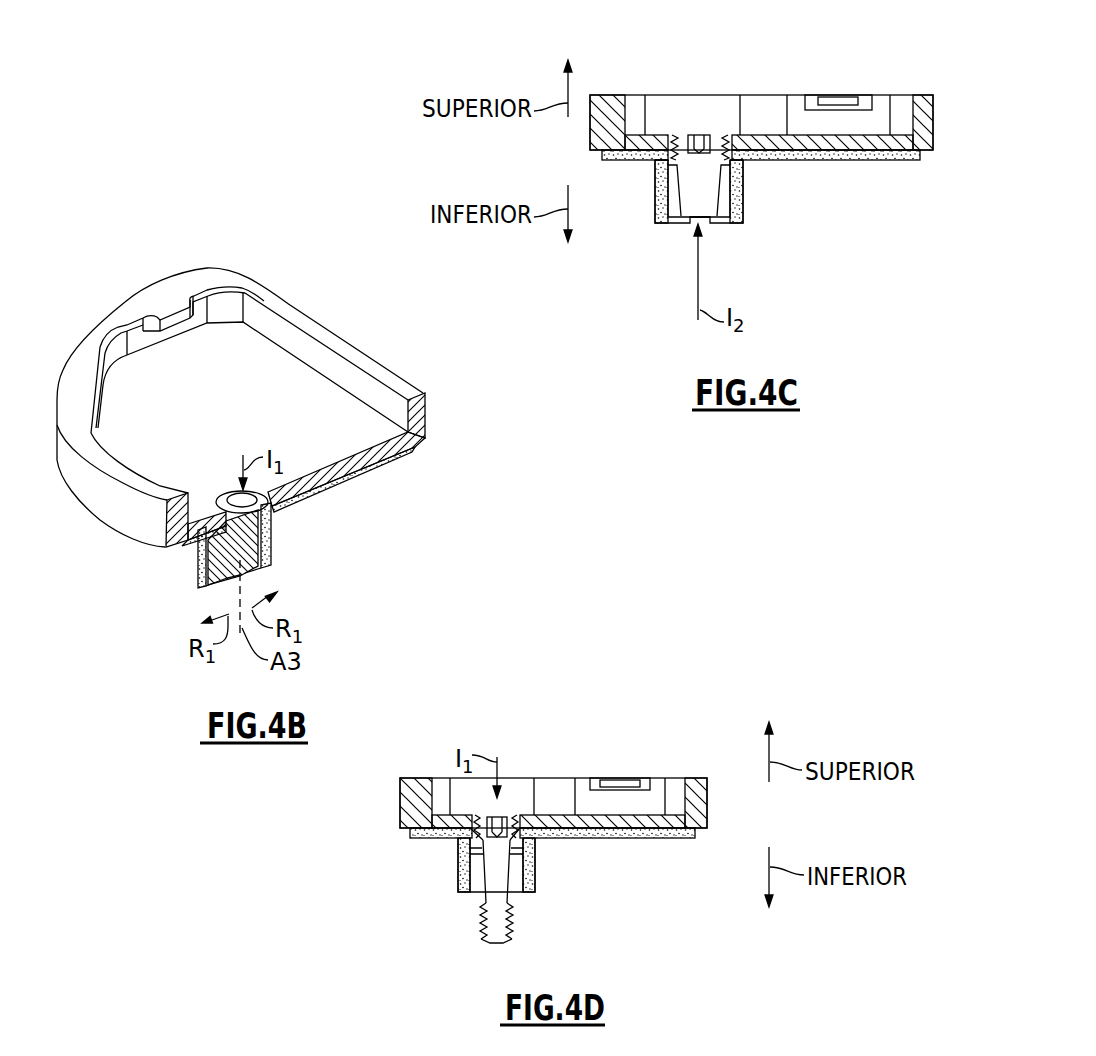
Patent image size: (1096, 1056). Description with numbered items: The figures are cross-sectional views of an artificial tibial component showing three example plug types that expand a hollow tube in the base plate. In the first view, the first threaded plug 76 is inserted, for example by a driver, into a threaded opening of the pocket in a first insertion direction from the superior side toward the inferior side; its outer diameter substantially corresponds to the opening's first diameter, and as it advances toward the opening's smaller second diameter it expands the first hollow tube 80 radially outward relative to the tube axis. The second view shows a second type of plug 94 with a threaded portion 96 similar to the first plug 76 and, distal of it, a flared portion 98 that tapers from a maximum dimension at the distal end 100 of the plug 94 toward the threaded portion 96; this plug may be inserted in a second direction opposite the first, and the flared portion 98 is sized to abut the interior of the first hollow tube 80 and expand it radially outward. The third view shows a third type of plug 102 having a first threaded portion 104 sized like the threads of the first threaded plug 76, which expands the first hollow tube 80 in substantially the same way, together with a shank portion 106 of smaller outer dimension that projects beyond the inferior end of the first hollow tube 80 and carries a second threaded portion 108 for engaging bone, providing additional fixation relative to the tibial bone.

In FIG. 4B, the first threaded plug 76 is at (228, 492).
In FIG. 4B, the first hollow tube 80 is at (288, 528).
In FIG. 4D, the first hollow tube 80 is at (450, 868).
In FIG. 4C, the second type of plug 94 is at (718, 108).
In FIG. 4C, the threaded portion 96 is at (732, 134).
In FIG. 4C, the flared portion 98 is at (718, 197).
In FIG. 4C, the distal end 100 is at (706, 226).
In FIG. 4D, the third type of plug 102 is at (524, 800).
In FIG. 4D, the first threaded portion 104 is at (533, 840).
In FIG. 4D, the shank portion 106 is at (520, 905).
In FIG. 4D, the second threaded portion 108 is at (507, 933).